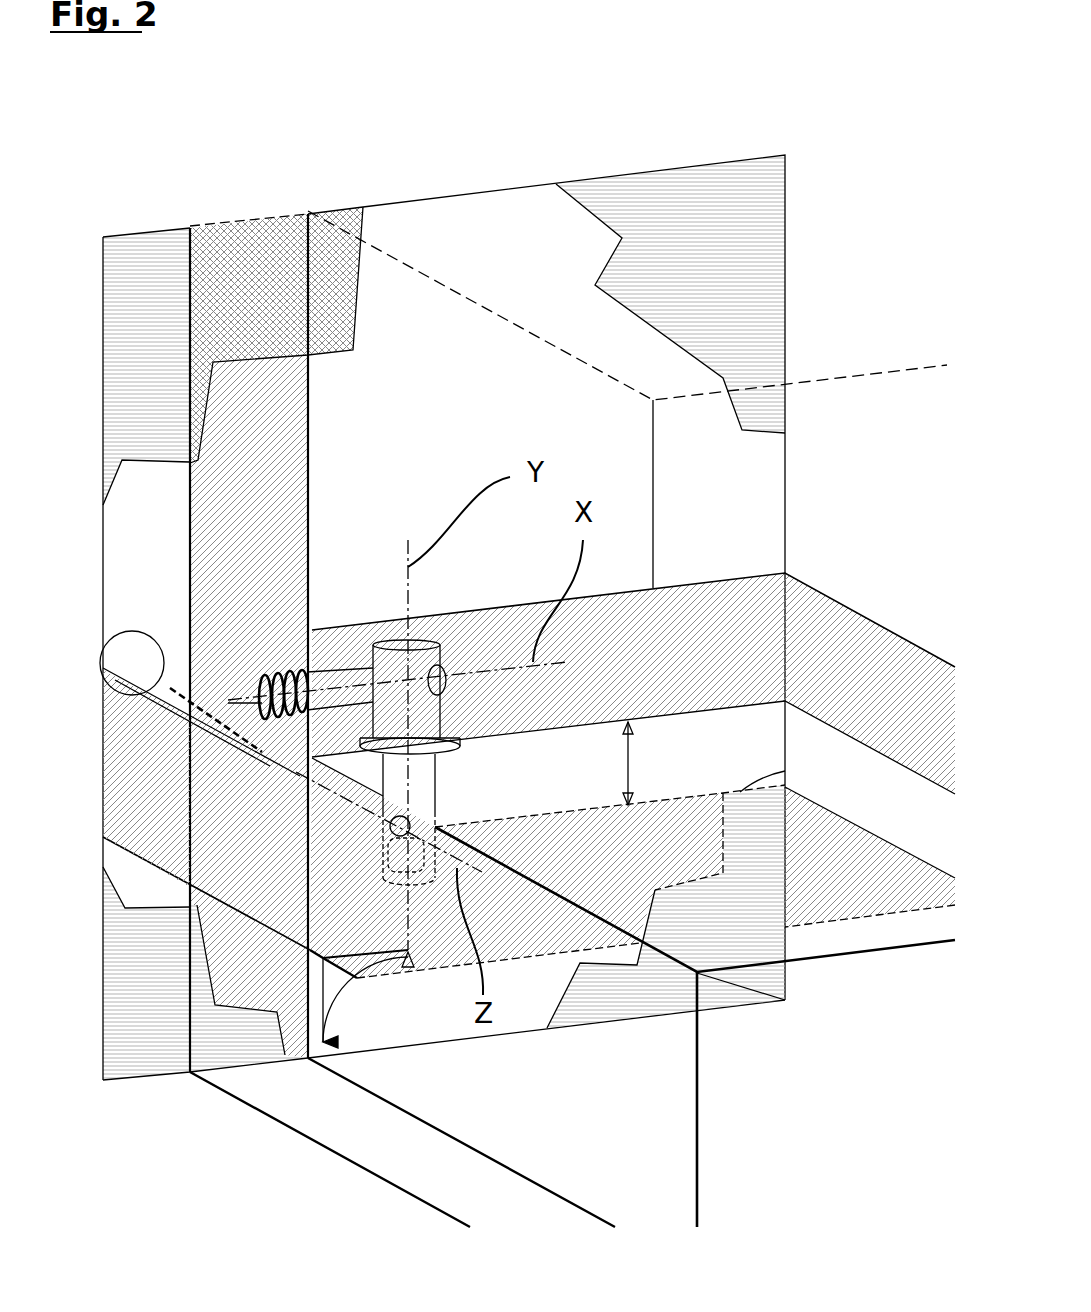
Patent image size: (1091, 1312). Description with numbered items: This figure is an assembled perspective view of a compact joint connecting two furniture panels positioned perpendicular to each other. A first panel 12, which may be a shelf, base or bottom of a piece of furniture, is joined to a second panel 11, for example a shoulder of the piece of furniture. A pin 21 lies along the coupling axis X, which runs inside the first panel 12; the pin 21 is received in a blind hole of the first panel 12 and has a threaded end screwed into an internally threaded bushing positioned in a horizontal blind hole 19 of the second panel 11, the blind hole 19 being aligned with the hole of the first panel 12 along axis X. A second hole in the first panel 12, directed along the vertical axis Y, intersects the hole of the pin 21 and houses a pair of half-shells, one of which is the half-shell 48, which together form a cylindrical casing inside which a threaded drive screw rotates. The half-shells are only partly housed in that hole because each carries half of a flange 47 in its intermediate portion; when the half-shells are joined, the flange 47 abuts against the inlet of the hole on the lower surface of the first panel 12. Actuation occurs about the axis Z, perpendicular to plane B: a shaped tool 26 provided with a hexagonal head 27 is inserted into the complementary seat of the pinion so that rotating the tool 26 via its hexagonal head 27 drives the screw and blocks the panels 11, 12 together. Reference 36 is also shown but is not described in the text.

The second panel 11 is at (275, 247).
The first panel 12 is at (904, 652).
The blind hole 19 is at (257, 700).
The pin 21 is at (337, 672).
The shaped tool 26 is at (149, 669).
The hexagonal head 27 is at (263, 753).
The bore 36 is at (278, 675).
The flange 47 is at (448, 746).
The half-shell 48 is at (425, 787).